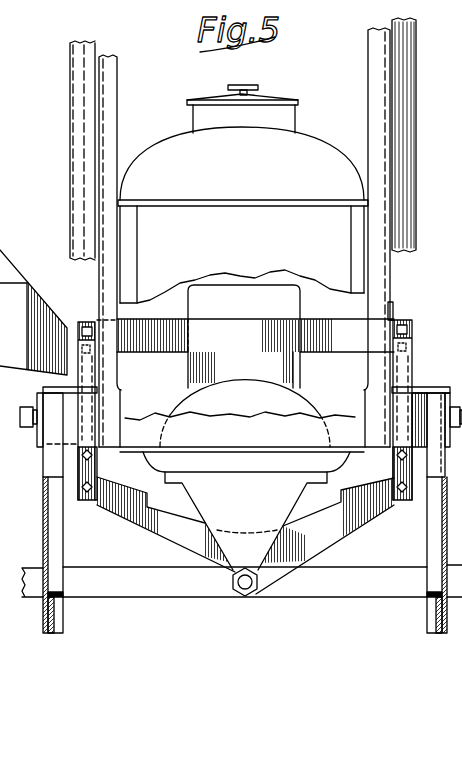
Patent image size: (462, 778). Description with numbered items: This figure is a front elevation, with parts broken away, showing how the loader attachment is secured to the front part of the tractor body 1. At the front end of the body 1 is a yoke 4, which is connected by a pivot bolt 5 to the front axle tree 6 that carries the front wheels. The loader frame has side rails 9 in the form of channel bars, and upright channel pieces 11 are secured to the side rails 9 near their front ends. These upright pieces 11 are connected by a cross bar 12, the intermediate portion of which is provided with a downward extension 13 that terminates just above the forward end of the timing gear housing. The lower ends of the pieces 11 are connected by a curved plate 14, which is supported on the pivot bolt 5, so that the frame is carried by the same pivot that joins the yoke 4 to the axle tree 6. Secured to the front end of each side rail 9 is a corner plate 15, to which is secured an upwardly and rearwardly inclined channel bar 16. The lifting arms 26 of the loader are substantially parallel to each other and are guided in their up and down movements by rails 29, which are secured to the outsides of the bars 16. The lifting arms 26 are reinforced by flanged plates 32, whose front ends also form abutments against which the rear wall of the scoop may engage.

The body portion 1 is at (299, 152).
The rails 29 is at (82, 119).
The channel bar 16 is at (110, 110).
The cross bar 12 is at (352, 332).
The downward extension 13 is at (280, 372).
The corner plate 15 is at (394, 311).
The upright channel pieces 11 is at (86, 322).
The side rails 9 is at (110, 447).
The yoke 4 is at (200, 490).
The curved plate 14 is at (347, 520).
The pivot bolt 5 is at (252, 587).
The front axle tree 6 is at (348, 583).
The flanged plates 32 is at (43, 536).
The lifting arms 26 is at (52, 610).